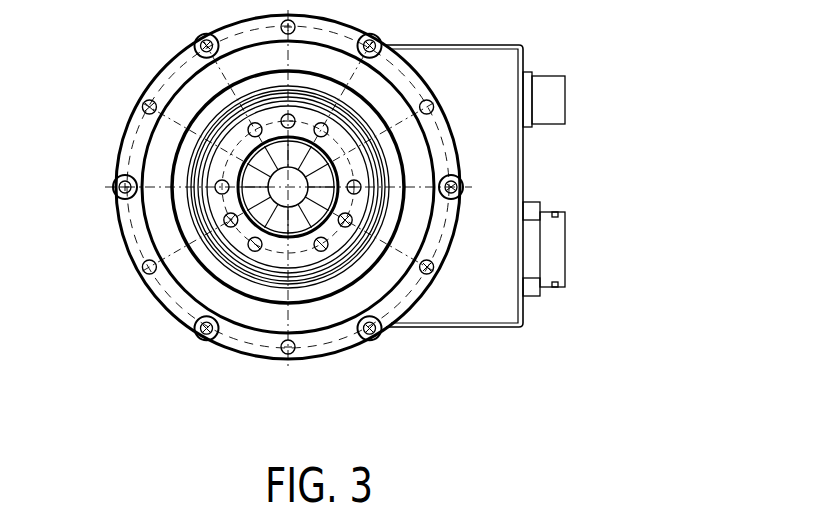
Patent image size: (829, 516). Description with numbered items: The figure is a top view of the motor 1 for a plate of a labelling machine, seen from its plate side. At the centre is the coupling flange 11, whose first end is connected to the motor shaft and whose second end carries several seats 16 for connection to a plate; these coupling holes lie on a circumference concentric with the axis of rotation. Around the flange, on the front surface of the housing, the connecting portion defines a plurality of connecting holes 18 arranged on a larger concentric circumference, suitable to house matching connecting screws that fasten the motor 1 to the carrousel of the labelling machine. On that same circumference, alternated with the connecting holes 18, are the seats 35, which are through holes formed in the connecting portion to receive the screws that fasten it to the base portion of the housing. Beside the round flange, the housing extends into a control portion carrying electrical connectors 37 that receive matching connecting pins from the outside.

The motor 1 is at (346, 239).
The coupling flange 11 is at (195, 117).
The seats 16 is at (212, 196).
The connecting holes 18 is at (288, 355).
The seats 35 is at (377, 338).
The electrical connectors 37 is at (548, 98).